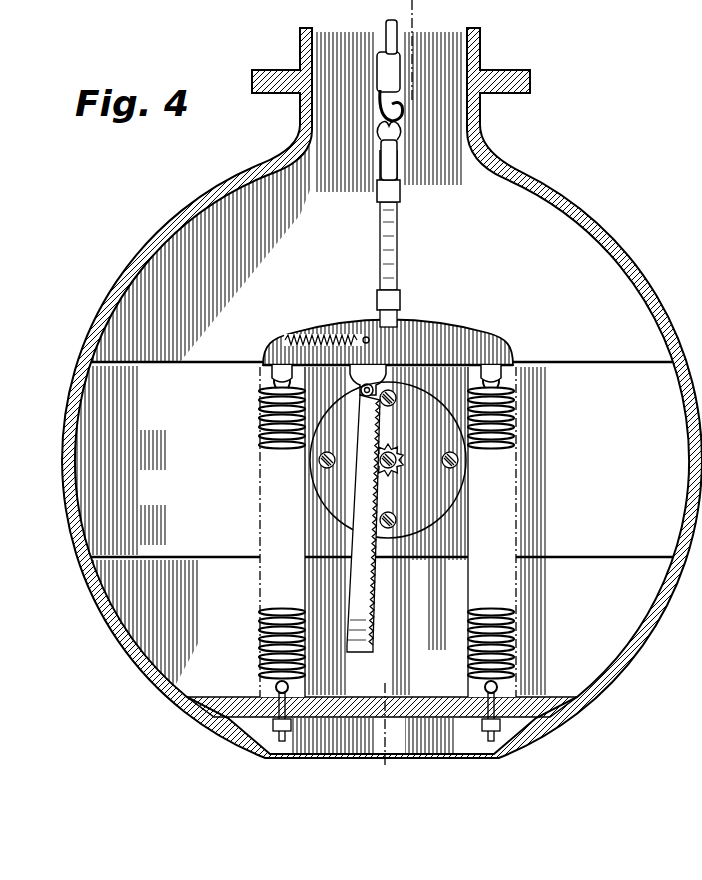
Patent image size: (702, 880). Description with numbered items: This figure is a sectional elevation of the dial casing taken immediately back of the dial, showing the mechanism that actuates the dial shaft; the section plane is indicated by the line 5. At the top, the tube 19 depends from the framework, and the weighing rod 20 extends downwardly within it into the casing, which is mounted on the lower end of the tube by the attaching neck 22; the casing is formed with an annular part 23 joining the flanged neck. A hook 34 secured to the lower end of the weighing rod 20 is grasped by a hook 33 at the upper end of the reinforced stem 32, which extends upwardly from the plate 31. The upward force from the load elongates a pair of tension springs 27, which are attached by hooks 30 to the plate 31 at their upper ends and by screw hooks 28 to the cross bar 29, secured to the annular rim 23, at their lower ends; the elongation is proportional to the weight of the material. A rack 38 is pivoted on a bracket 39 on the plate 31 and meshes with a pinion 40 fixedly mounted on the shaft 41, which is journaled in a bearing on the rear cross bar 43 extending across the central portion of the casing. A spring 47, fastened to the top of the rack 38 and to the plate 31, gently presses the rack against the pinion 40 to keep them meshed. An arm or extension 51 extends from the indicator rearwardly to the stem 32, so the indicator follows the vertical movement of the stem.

The section line 5- 5 is at (444, 52).
The tube 19 is at (483, 56).
The weighing rod 20 is at (386, 36).
The attaching neck 22 is at (486, 130).
The annular part 23 is at (682, 350).
The tension springs 27 is at (518, 516).
The screw hooks 28 is at (503, 691).
The cross bar 29 is at (440, 695).
The hooks 30 is at (411, 526).
The plate 31 is at (432, 346).
The reinforced stem 32 is at (400, 228).
The hook 33 is at (400, 152).
The hook 34 is at (396, 90).
The rack 38 is at (368, 579).
The bracket 39 is at (384, 382).
The pinion 40 is at (404, 462).
The shaft 41 is at (400, 456).
The rear cross bar 43 is at (382, 459).
The spring 47 is at (322, 345).
The arm or extension 51 is at (378, 176).